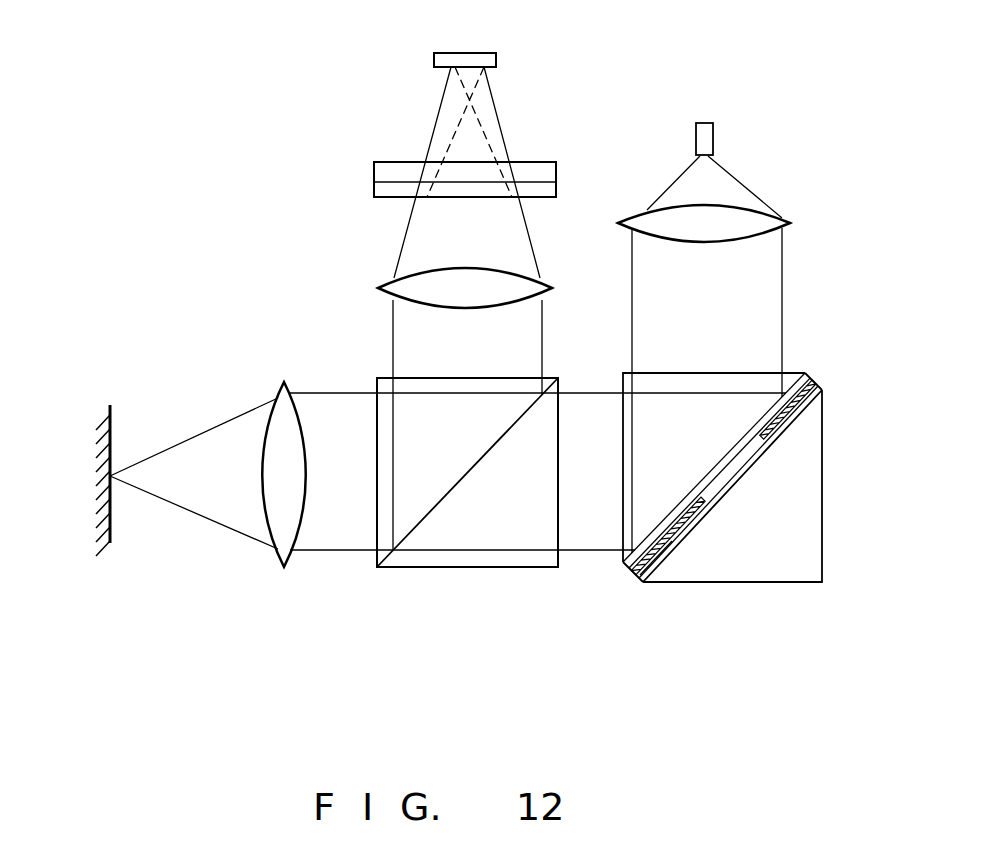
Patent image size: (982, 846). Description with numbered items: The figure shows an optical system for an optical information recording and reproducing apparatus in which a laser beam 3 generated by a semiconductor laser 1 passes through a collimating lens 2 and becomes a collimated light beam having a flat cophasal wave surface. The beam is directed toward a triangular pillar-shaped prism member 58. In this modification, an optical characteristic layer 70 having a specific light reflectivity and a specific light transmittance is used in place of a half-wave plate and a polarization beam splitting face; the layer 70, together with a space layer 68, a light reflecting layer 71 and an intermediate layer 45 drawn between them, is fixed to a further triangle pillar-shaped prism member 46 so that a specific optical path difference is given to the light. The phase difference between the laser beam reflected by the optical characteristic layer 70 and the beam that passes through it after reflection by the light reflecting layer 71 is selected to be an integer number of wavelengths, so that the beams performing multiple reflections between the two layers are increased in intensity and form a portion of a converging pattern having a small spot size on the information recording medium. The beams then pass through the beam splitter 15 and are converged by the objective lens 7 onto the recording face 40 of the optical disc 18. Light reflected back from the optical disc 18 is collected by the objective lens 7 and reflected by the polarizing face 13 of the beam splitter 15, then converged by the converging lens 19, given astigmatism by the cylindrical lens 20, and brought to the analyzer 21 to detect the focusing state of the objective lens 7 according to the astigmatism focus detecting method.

The semiconductor laser 1 is at (708, 140).
The collimating lens 2 is at (785, 217).
The laser beam 3 is at (768, 276).
The objective lens 7 is at (282, 386).
The polarizing face 13 is at (456, 489).
The beam splitter 15 is at (499, 570).
The optical disc 18 is at (97, 464).
The converging lens 19 is at (547, 285).
The cylindrical lens 20 is at (532, 170).
The analyzer 21 is at (468, 57).
The recording face 40 is at (112, 440).
The hologram plate 45 is at (738, 473).
The prism member 46 is at (808, 487).
The prism member 58 is at (665, 373).
The space layer 68 is at (806, 376).
The optical characteristic layer 70 is at (690, 488).
The light reflecting layer 71 is at (672, 541).